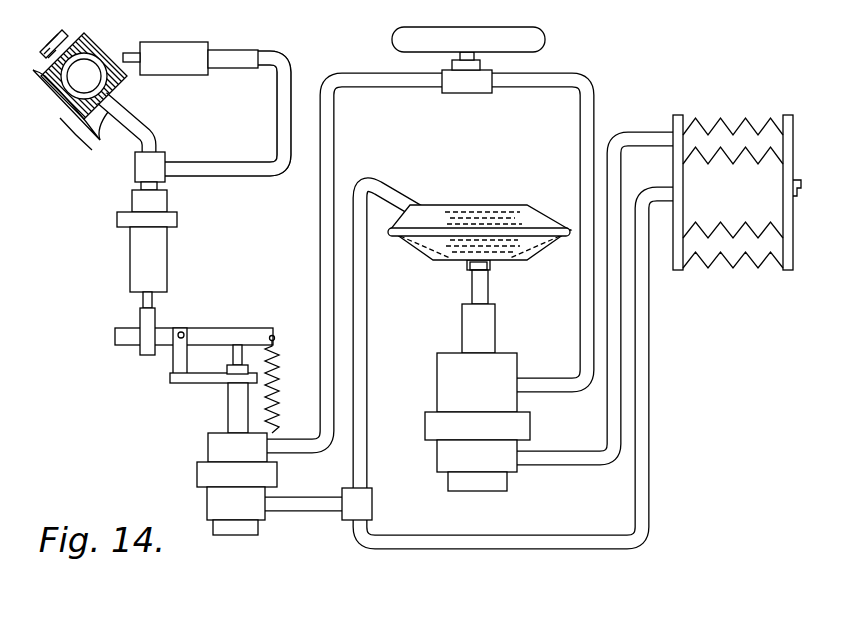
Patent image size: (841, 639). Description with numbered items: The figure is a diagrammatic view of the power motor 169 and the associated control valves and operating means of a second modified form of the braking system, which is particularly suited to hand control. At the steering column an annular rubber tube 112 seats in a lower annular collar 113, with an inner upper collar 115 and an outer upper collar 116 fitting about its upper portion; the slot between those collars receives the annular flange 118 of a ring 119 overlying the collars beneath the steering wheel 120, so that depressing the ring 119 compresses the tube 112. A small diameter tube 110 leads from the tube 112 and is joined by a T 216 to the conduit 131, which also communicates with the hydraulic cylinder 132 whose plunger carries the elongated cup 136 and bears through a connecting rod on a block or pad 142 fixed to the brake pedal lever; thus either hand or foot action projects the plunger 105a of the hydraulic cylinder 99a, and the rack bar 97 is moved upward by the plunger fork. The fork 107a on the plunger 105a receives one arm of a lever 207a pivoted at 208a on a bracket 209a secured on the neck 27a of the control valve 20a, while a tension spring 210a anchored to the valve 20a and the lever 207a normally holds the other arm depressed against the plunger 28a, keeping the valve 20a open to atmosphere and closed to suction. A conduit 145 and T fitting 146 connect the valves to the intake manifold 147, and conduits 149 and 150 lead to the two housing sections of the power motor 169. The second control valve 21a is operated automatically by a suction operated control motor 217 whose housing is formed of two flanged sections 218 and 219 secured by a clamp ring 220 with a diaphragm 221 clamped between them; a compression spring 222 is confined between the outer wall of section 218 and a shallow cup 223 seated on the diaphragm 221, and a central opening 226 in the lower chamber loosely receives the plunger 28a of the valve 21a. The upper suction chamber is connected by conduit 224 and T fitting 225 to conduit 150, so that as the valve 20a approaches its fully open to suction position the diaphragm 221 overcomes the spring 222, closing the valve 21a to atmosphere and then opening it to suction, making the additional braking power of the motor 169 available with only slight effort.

The annular flange 118 is at (101, 46).
The ring 119 is at (48, 52).
The outer upper collar 116 is at (100, 48).
The steering wheel 120 is at (133, 64).
The elongated cup 136 is at (196, 64).
The hydraulic cylinder 132 is at (270, 50).
The tube 131 is at (278, 133).
The tube 110 is at (137, 127).
The T 216 is at (166, 160).
The inner upper collar 115 is at (42, 92).
The annular rubber tube 112 is at (98, 140).
The lower annular collar 113 is at (105, 130).
The hydraulic cylinder 99a is at (128, 262).
The plunger 105a is at (143, 298).
The fork 107a is at (146, 330).
The lever 207a is at (126, 340).
The pivot 208a is at (183, 331).
The bracket 209a is at (172, 380).
The plunger 28a is at (236, 352).
The tension spring 210a is at (283, 368).
The neck 27a is at (238, 409).
The control valve 20a is at (206, 447).
The conduit 224 is at (366, 475).
The T fitting 225 is at (374, 506).
The conduit 150 is at (312, 510).
The conduit 149 is at (583, 462).
The conduit 145 is at (596, 95).
The block or pad 142 is at (323, 224).
The T fitting 146 is at (470, 94).
The intake manifold 147 is at (546, 38).
The power motor 169 is at (744, 114).
The rack bar 97 is at (793, 182).
The suction operated control motor 217 is at (475, 233).
The housing section 218 is at (430, 204).
The housing section 219 is at (436, 262).
The clamp ring 220 is at (558, 226).
The compression spring 222 is at (470, 210).
The diaphragm 221 is at (420, 246).
The shallow cup 223 is at (470, 250).
The central opening 226 is at (490, 272).
The control valve 21a is at (520, 366).